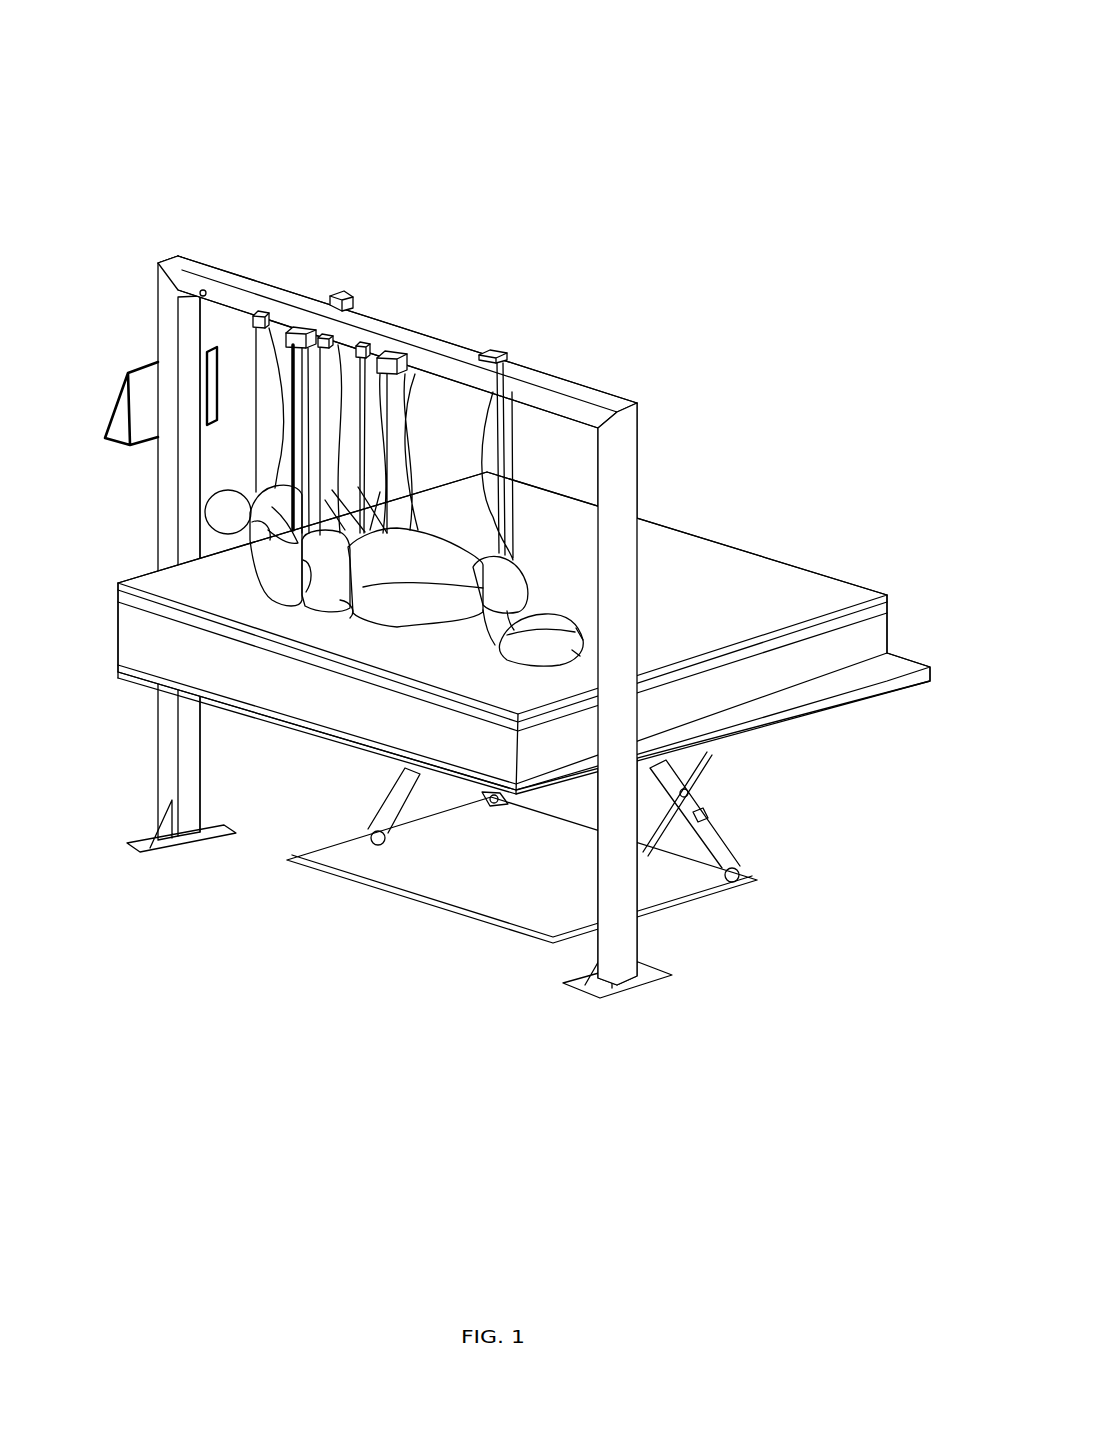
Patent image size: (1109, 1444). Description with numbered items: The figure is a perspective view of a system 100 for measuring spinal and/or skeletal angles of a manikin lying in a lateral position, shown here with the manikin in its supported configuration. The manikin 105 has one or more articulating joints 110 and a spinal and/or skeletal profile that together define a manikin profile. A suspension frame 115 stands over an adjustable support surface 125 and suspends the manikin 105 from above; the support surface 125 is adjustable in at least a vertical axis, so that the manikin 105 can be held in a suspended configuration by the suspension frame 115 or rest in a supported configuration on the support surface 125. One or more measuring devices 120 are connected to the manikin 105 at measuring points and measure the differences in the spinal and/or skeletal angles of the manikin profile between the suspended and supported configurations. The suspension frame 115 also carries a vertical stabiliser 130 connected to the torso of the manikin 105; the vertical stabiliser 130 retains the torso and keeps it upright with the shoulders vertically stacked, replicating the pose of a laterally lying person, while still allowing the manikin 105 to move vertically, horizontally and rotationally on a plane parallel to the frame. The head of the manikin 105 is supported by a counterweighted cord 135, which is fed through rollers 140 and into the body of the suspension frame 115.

The system 100 is at (723, 152).
The manikin 105 is at (285, 575).
The articulating joints 110 is at (250, 545).
The suspension frame 115 is at (608, 396).
The measuring devices 120 is at (263, 312).
The support surface 125 is at (733, 545).
The vertical stabiliser 130 is at (293, 440).
The counterweighted cord 135 is at (207, 320).
The rollers 140 is at (203, 292).